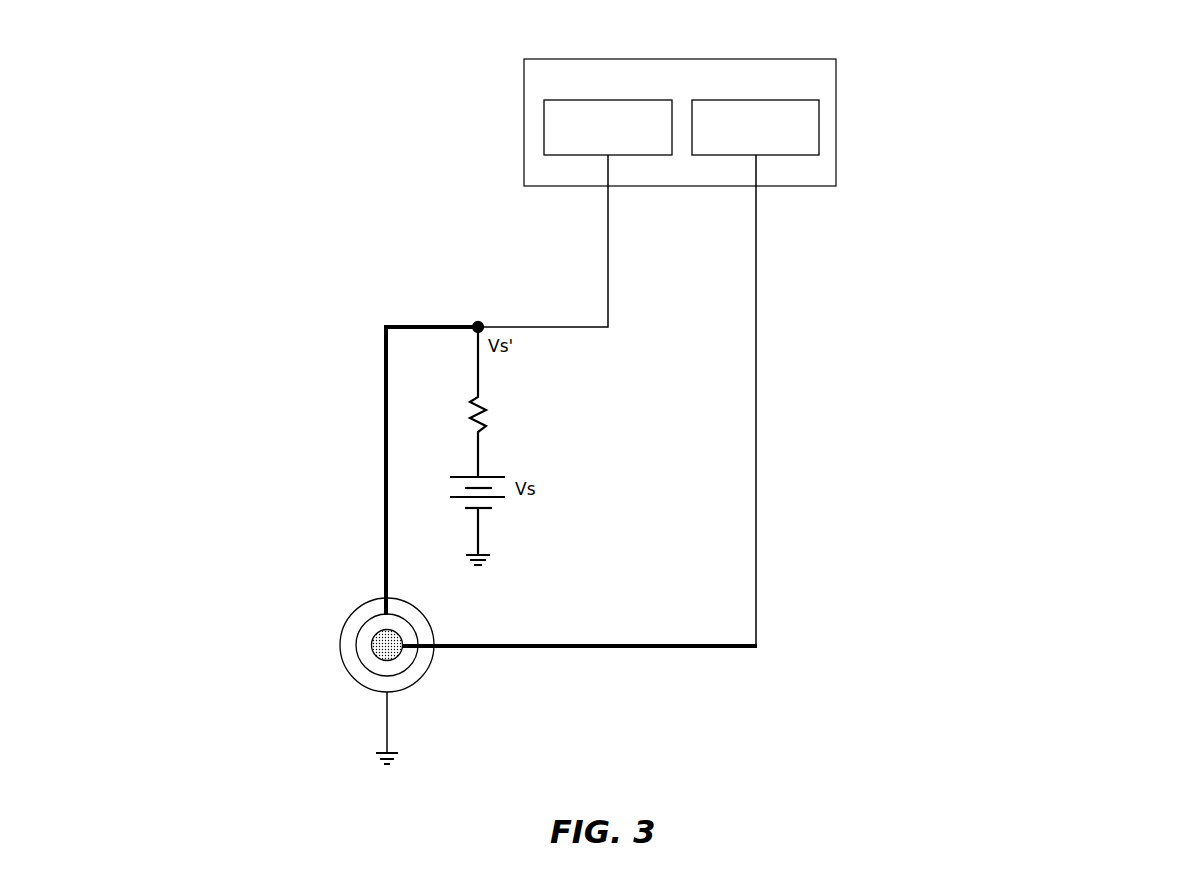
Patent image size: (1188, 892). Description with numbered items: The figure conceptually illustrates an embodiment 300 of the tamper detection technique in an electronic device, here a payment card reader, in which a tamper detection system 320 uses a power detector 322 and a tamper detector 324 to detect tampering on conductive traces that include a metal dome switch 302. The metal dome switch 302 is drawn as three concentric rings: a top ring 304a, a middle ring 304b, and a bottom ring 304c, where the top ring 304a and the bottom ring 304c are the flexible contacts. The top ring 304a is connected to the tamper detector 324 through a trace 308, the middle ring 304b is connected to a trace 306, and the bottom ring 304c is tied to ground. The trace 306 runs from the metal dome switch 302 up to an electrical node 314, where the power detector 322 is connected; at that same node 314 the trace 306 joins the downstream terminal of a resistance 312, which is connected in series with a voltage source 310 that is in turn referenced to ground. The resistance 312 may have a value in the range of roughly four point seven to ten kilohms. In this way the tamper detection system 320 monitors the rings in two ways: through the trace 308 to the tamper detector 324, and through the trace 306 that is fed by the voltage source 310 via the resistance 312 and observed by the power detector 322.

The embodiment 300 is at (1115, 64).
The metal dome switch 302 is at (327, 679).
The top ring 304a is at (380, 630).
The middle ring 304b is at (357, 642).
The bottom ring 304c is at (348, 668).
The trace 306 is at (386, 365).
The trace 308 is at (609, 646).
The voltage source 310 is at (503, 477).
The resistance 312 is at (483, 404).
The electrical node 314 is at (497, 288).
The tamper detection system 320 is at (680, 122).
The power detector 322 is at (608, 127).
The tamper detector 324 is at (755, 127).